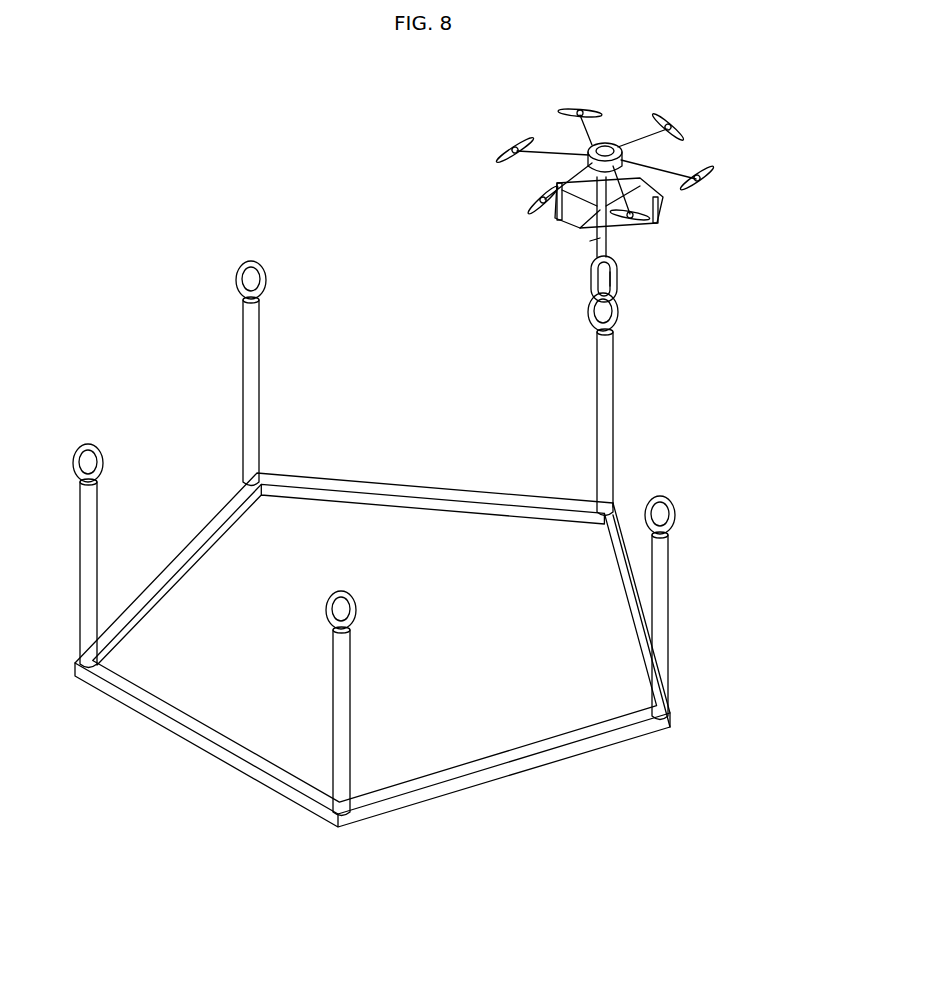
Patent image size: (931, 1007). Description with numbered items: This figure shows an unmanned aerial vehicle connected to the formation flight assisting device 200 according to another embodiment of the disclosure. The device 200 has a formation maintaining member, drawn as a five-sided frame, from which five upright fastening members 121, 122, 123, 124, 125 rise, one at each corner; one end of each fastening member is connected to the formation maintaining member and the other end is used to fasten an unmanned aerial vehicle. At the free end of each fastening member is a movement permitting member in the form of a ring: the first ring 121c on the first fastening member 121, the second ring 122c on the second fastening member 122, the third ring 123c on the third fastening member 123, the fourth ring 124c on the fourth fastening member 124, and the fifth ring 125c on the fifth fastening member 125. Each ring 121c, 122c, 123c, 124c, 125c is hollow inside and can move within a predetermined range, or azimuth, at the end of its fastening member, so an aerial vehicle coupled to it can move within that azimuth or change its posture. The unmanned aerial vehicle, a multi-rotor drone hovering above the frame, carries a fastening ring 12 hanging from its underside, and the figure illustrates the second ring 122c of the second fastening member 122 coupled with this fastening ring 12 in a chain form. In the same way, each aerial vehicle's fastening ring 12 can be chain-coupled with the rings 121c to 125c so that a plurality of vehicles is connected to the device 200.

The formation flight assisting device 200 is at (748, 243).
The fastening ring 12 is at (590, 284).
The first fastening member 121 is at (259, 366).
The first ring 121c is at (253, 262).
The second fastening member 122 is at (613, 400).
The second ring 122c is at (616, 322).
The third fastening member 123 is at (668, 606).
The third ring 123c is at (663, 494).
The fourth fastening member 124 is at (351, 700).
The fourth ring 124c is at (346, 590).
The fifth fastening member 125 is at (97, 556).
The fifth ring 125c is at (90, 444).